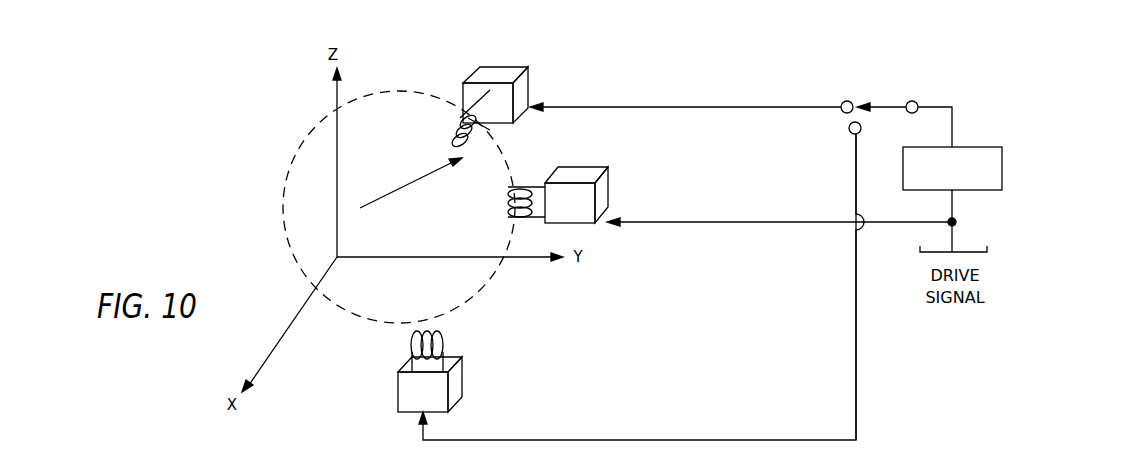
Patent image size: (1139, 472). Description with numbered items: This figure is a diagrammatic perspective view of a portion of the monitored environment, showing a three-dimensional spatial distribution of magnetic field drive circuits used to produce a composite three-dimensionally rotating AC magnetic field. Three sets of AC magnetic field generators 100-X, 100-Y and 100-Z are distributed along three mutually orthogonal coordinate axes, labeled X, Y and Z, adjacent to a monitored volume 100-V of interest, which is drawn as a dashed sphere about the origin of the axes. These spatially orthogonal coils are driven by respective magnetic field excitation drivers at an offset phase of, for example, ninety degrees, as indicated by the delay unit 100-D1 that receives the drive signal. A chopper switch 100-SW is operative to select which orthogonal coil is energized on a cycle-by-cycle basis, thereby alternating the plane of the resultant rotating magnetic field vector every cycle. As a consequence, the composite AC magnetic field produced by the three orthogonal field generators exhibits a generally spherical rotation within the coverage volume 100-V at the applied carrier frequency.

The monitored volume 100-V is at (303, 200).
The AC magnetic field generator 100-Z is at (530, 84).
The AC magnetic field generator 100-X is at (610, 185).
The AC magnetic field generator 100-Y is at (465, 380).
The chopper switch 100-SW is at (894, 126).
The delay unit 100-D1 is at (1003, 160).